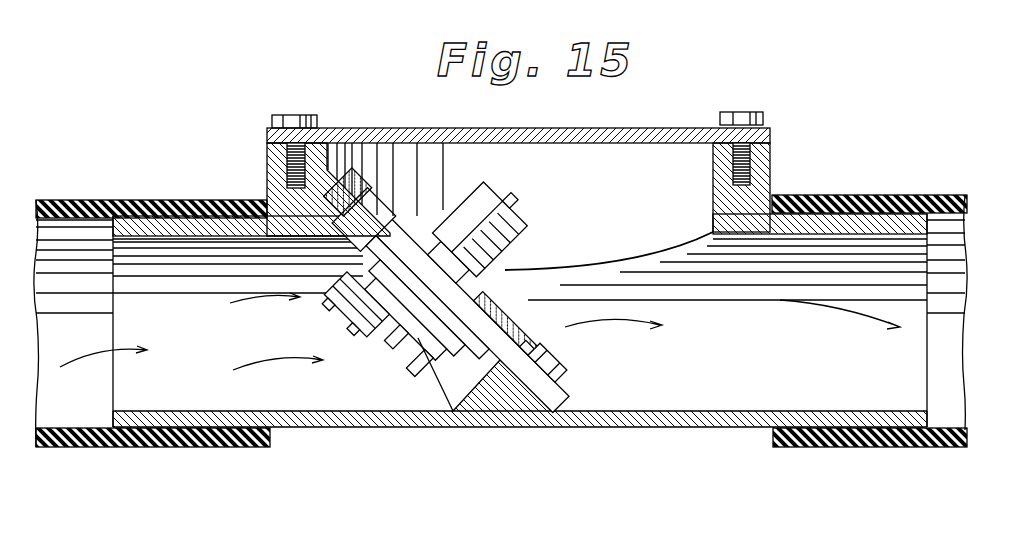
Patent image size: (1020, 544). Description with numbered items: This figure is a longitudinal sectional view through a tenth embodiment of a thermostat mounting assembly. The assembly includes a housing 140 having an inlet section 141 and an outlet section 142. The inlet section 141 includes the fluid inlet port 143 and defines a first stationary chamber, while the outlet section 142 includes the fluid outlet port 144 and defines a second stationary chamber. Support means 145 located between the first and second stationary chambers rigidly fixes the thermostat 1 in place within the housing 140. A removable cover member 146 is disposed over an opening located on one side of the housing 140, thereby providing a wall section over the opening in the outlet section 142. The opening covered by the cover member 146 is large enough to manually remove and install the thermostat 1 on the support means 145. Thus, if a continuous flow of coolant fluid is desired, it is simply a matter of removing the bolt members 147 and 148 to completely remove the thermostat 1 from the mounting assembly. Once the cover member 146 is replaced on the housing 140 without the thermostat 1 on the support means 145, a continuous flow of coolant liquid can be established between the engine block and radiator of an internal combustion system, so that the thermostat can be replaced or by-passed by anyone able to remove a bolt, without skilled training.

The thermostat 1 is at (570, 254).
The housing 140 is at (509, 448).
The inlet section 141 is at (200, 340).
The outlet section 142 is at (793, 367).
The fluid inlet port 143 is at (143, 230).
The fluid outlet port 144 is at (857, 220).
The support means 145 is at (572, 375).
The cover member 146 is at (637, 130).
The bolt member 147 is at (276, 120).
The bolt member 148 is at (352, 178).